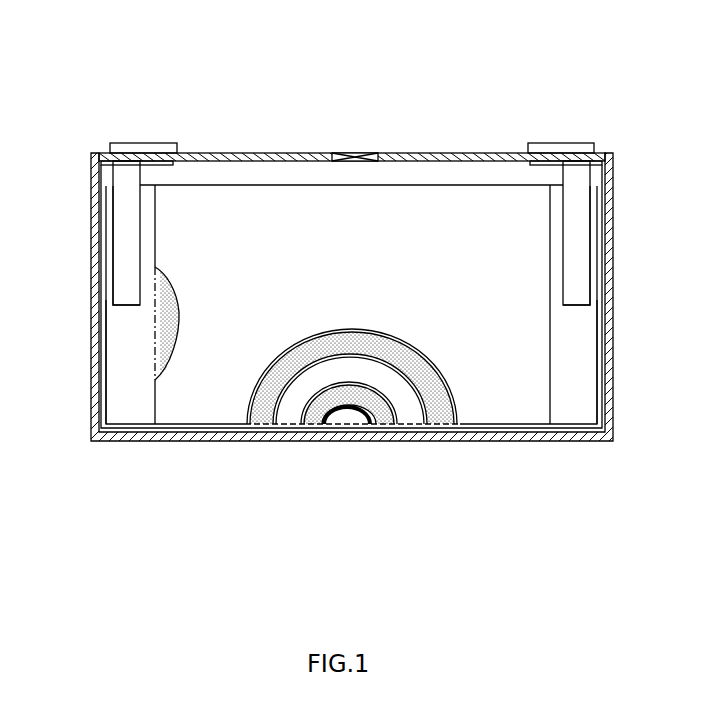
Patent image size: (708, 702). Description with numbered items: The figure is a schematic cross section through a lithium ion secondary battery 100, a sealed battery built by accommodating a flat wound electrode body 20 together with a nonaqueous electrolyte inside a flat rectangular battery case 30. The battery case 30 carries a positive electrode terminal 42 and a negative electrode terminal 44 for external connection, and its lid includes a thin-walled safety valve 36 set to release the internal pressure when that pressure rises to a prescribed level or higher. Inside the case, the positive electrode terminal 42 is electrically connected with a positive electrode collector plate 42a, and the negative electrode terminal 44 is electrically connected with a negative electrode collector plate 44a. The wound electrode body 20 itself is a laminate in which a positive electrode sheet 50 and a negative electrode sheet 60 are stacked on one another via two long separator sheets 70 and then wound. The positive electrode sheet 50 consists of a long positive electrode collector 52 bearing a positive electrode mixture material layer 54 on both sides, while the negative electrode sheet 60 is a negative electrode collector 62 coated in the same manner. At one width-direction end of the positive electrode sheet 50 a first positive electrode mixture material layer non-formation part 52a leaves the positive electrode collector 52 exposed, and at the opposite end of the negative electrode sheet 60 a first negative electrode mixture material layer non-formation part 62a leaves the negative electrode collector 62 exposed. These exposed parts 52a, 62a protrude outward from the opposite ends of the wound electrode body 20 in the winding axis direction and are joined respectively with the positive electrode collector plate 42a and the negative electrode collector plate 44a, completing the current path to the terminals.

The lithium ion secondary battery 100 is at (628, 78).
The wound electrode body 20 is at (273, 183).
The battery case 30 is at (615, 262).
The safety valve 36 is at (362, 153).
The positive electrode terminal 42 is at (153, 142).
The positive electrode collector plate 42a is at (125, 223).
The negative electrode terminal 44 is at (573, 142).
The negative electrode collector plate 44a is at (580, 219).
The positive electrode sheet 50 is at (262, 417).
The positive electrode collector 52 is at (97, 327).
The first positive electrode mixture material layer non-formation part 52a is at (117, 393).
The positive electrode mixture material layer 54 is at (180, 300).
The negative electrode sheet 60 is at (320, 417).
The negative electrode collector 62 is at (600, 330).
The first negative electrode mixture material layer non-formation part 62a is at (580, 392).
The separator sheet 70 is at (195, 377).